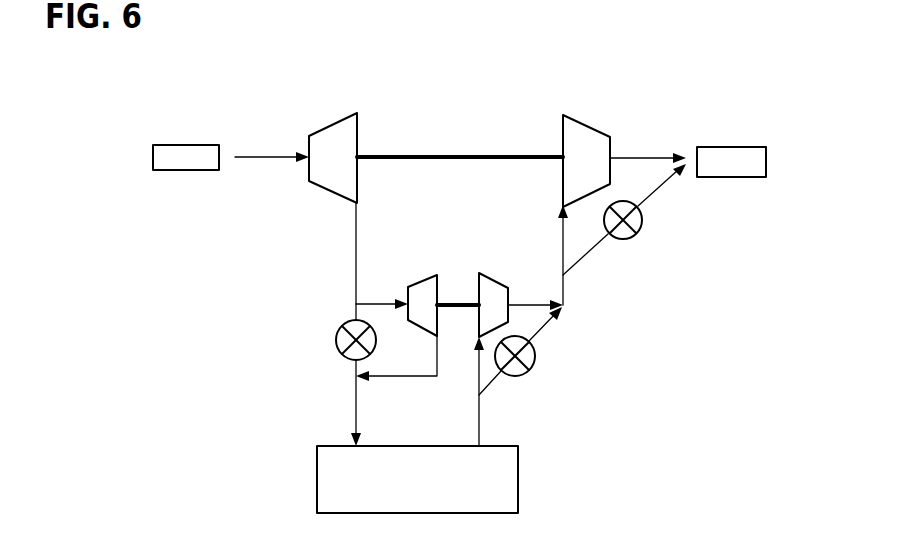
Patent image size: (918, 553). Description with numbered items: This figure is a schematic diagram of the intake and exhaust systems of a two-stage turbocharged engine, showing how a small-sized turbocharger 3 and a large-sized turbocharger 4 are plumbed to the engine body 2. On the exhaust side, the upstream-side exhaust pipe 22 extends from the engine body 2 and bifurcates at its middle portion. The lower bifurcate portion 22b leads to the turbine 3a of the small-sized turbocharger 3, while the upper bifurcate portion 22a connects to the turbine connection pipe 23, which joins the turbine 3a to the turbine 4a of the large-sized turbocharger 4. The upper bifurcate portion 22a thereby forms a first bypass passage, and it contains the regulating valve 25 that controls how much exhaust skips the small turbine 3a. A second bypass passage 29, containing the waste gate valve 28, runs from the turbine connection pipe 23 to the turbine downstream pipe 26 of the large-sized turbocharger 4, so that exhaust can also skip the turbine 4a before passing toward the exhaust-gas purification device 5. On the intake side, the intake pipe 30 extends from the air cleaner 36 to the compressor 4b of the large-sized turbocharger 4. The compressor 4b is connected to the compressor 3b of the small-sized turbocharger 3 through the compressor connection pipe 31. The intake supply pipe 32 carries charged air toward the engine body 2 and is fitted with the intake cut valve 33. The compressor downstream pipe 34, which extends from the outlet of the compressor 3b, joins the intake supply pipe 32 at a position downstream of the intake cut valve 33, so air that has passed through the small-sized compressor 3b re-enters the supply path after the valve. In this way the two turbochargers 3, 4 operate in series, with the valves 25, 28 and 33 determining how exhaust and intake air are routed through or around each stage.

The engine body 2 is at (519, 490).
The small-sized turbocharger 3 is at (462, 268).
The turbine of the small-sized turbocharger 3a is at (485, 270).
The compressor of the small-sized turbocharger 3b is at (423, 283).
The large-sized turbocharger 4 is at (481, 116).
The turbine of the large-sized turbocharger 4a is at (595, 137).
The compressor of the large-sized turbocharger 4b is at (332, 133).
The exhaust-gas purification device 5 is at (735, 147).
The upstream-side exhaust pipe 22 is at (504, 376).
The upper bifurcate portion 22a is at (492, 382).
The lower bifurcate portion 22b is at (473, 380).
The turbine connection pipe 23 is at (567, 292).
The regulating valve 25 is at (536, 354).
The turbine downstream pipe 26 is at (640, 158).
The waste gate valve 28 is at (643, 222).
The second bypass passage 29 is at (593, 250).
The intake pipe 30 is at (258, 160).
The compressor connection pipe 31 is at (355, 250).
The intake supply pipe 32 is at (352, 395).
The intake cut valve 33 is at (335, 340).
The compressor downstream pipe 34 is at (397, 378).
The air cleaner 36 is at (185, 145).